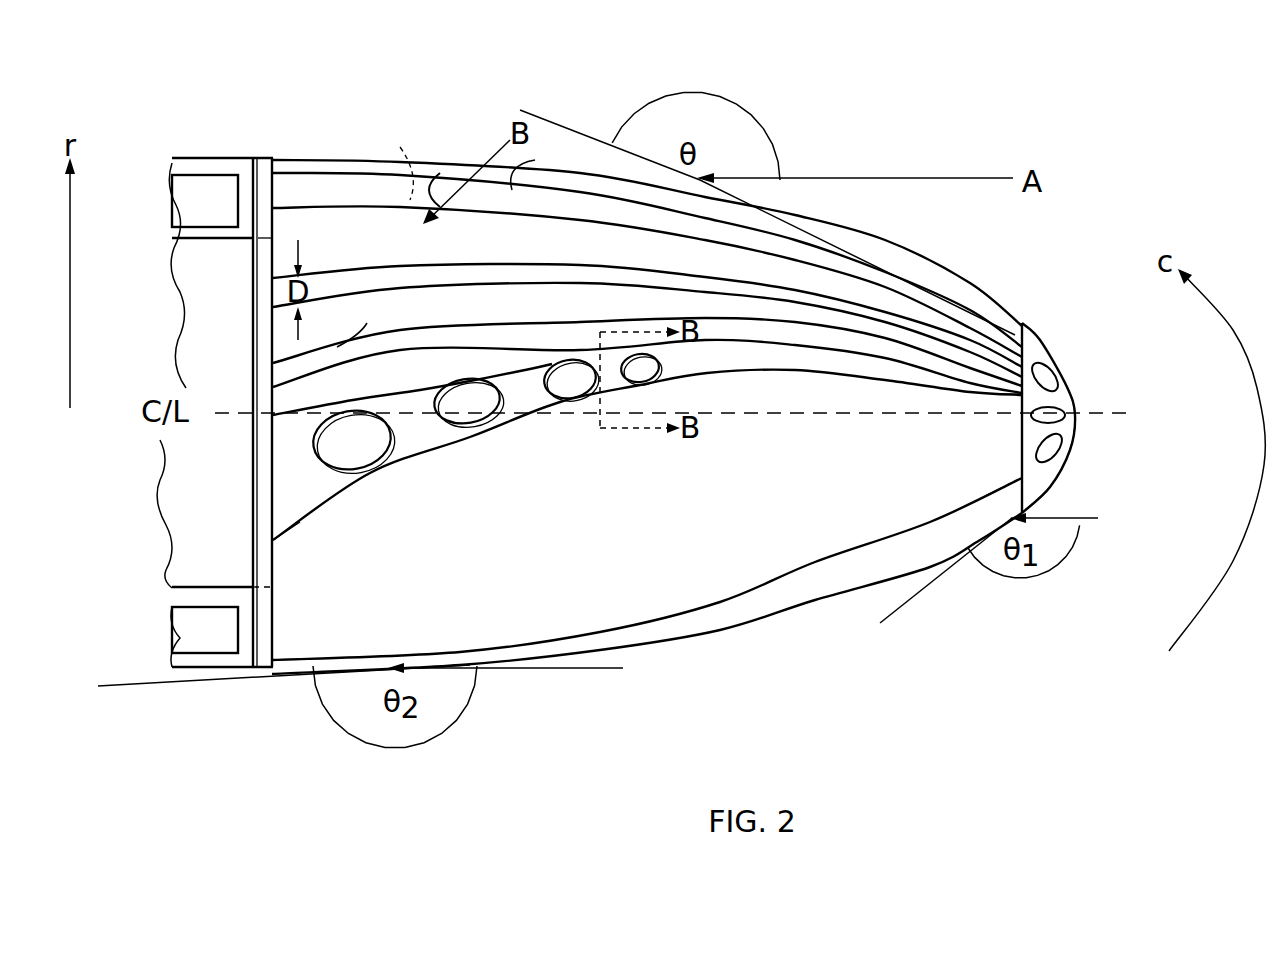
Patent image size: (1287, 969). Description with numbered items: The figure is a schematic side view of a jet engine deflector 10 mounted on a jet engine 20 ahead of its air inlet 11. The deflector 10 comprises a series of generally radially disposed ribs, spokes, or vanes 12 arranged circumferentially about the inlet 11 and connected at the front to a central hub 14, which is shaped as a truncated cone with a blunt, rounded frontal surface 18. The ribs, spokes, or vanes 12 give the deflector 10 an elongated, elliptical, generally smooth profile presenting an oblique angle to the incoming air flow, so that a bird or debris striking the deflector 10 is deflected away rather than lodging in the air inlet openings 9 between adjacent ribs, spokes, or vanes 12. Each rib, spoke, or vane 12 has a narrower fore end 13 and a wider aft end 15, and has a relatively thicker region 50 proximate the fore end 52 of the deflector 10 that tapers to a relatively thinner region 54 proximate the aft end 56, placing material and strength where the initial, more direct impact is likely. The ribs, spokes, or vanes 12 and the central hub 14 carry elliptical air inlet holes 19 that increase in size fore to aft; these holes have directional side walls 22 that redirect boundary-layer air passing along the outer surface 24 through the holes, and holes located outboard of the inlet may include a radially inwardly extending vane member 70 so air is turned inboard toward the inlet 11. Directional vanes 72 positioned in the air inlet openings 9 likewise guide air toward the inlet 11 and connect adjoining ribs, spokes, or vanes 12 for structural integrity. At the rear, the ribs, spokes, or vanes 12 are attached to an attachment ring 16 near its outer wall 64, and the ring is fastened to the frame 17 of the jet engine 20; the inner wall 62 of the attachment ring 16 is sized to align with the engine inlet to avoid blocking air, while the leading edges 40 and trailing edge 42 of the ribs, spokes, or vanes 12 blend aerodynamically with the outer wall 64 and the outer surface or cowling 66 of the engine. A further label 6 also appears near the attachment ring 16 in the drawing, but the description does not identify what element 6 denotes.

The deflector 10 is at (437, 122).
The ribs, spokes, or vanes 12 is at (347, 160).
The central hub 14 is at (1033, 350).
The attachment ring 16 is at (267, 183).
The leading edges 40 is at (292, 157).
The trailing edge 42 is at (490, 648).
The air inlet holes 19 is at (1048, 367).
The directional side walls 22 is at (360, 467).
The air inlet openings 9 is at (357, 193).
The directional vanes 72 is at (480, 198).
The vane member 70 is at (389, 156).
The outer surface or cowling 66 is at (223, 157).
The outer wall 64 is at (262, 157).
The jet engine 20 is at (205, 133).
The frame 17 is at (173, 232).
The gap 6 is at (263, 252).
The inner wall 62 is at (205, 240).
The inlet 11 is at (239, 498).
The wider aft end 15 is at (303, 498).
The aft end 56 is at (265, 708).
The thinner region 54 is at (286, 660).
The outer surface 24 is at (509, 374).
The frontal surface 18 is at (1074, 416).
The narrower fore end 13 is at (1018, 393).
The thicker region 50 is at (1000, 492).
The fore end 52 is at (1085, 471).